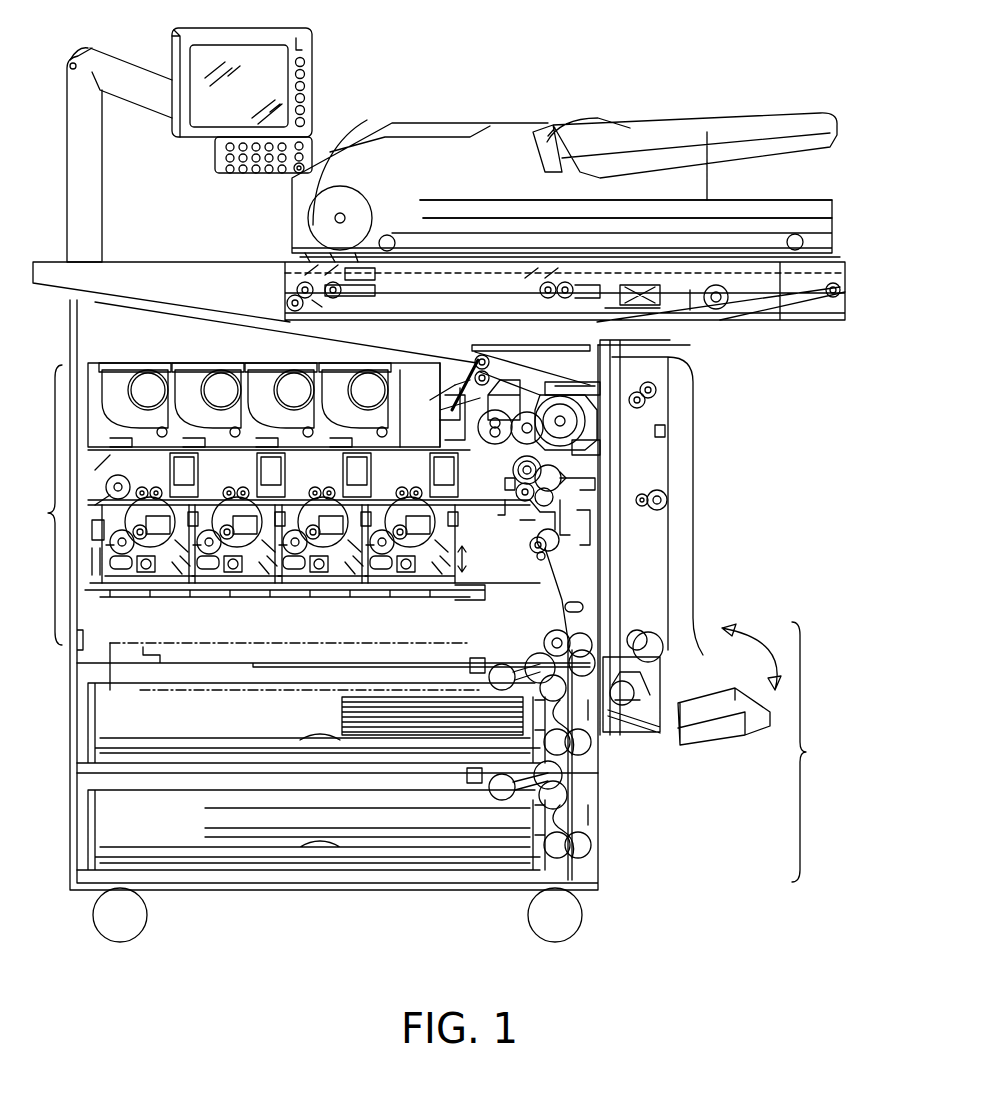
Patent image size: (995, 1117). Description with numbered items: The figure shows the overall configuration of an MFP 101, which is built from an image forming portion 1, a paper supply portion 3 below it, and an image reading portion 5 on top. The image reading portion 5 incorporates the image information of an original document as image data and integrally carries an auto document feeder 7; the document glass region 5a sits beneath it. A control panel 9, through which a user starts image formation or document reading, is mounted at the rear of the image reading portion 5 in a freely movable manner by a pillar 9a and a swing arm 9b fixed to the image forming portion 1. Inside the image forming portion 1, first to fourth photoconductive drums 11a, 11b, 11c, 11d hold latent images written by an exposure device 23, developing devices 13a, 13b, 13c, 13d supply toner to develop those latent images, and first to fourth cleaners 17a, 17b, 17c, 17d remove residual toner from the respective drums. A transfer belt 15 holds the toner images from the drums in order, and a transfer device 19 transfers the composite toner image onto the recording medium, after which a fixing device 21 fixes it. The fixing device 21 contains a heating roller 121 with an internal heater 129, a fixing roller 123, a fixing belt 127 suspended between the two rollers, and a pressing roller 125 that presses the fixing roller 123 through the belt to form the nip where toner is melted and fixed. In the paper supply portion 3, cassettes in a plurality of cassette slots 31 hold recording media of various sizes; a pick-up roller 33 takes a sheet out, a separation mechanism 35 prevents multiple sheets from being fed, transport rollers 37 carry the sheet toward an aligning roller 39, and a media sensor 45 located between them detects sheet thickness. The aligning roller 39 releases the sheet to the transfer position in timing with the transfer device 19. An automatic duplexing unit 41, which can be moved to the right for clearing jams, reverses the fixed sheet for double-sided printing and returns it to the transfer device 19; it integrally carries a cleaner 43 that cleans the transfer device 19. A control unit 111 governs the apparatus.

The image forming portion 1 is at (48, 513).
The paper supply portion 3 is at (752, 752).
The image reading portion 5 is at (805, 173).
The document glass 5a is at (515, 257).
The auto document feeder 7 is at (362, 163).
The control panel 9 is at (313, 57).
The pillar 9a is at (102, 187).
The swing arm 9b is at (120, 64).
The first photoconductive drum 11a is at (414, 543).
The second photoconductive drum 11b is at (330, 547).
The third photoconductive drum 11c is at (243, 547).
The fourth photoconductive drum 11d is at (157, 546).
The developing device 13a is at (378, 572).
The developing device 13b is at (296, 570).
The developing device 13c is at (210, 570).
The developing device 13d is at (121, 572).
The transfer belt 15 is at (539, 470).
The first cleaner 17a is at (456, 500).
The second cleaner 17b is at (344, 498).
The third cleaner 17c is at (258, 498).
The fourth cleaner 17d is at (172, 498).
The transfer device 19 is at (557, 484).
The fixing device 21 is at (505, 346).
The exposure device 23 is at (303, 660).
The cassette slots 31 is at (178, 838).
The pick-up roller 33 is at (503, 801).
The separation mechanism 35 is at (562, 797).
The transport rollers 37 is at (584, 640).
The aligning roller 39 is at (560, 560).
The automatic duplexing unit 41 is at (718, 495).
The cleaner 43 is at (544, 552).
The media sensor 45 is at (582, 604).
The MFP 101 is at (733, 440).
The control unit 111 is at (140, 692).
The heating roller 121 is at (492, 352).
The fixing roller 123 is at (572, 443).
The pressing roller 125 is at (584, 431).
The fixing belt 127 is at (562, 385).
The heater 129 is at (522, 474).